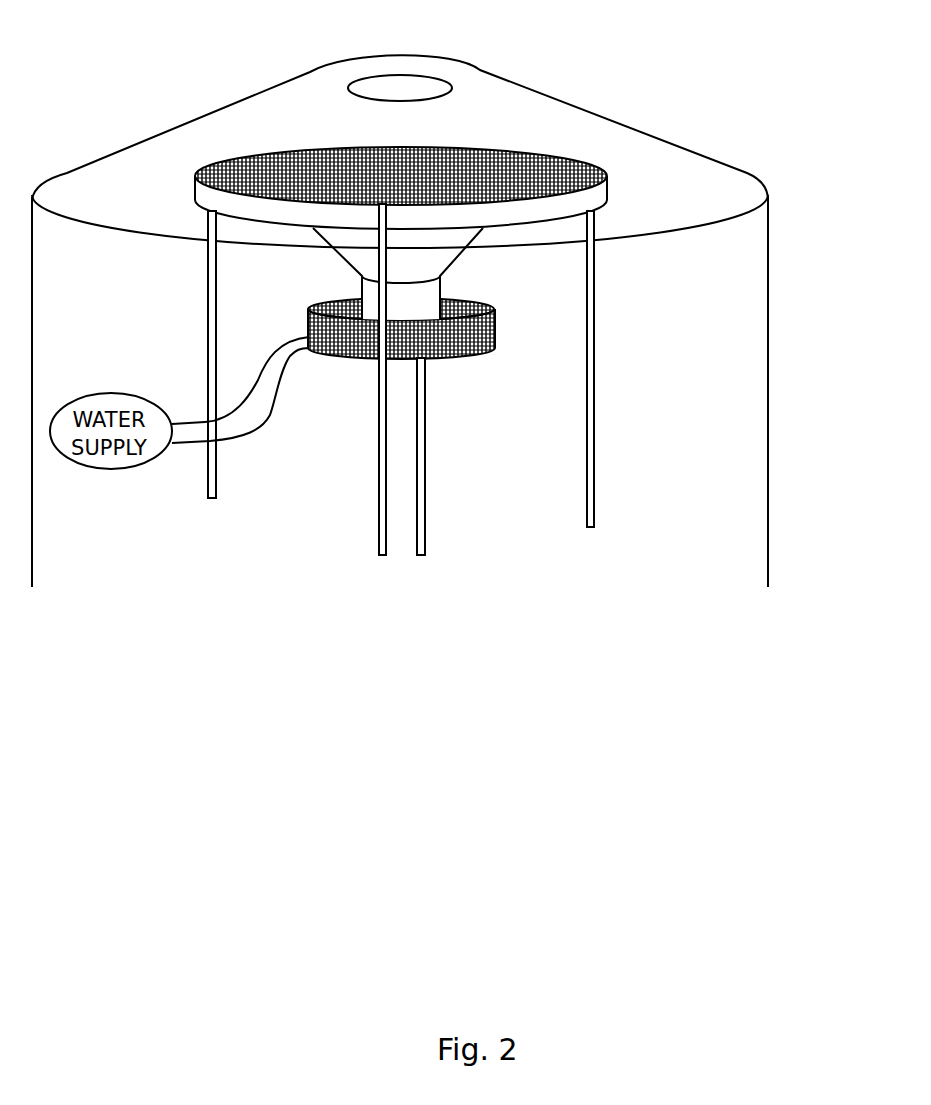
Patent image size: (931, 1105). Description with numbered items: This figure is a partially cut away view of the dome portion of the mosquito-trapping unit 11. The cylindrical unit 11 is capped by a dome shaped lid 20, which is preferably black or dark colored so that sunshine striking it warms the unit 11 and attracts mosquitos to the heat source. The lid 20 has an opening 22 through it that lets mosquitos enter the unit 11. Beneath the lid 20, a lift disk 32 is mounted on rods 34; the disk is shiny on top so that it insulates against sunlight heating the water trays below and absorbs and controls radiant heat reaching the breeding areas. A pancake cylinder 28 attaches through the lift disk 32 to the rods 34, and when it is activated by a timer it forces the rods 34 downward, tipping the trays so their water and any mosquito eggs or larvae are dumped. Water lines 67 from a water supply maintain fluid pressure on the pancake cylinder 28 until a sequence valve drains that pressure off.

The unit 11 is at (770, 370).
The dome shaped lid 20 is at (538, 92).
The opening 22 is at (406, 88).
The lift disk 32 is at (550, 172).
The pancake cylinder 28 is at (495, 337).
The rods 34 is at (208, 287).
The water lines 67 is at (198, 420).